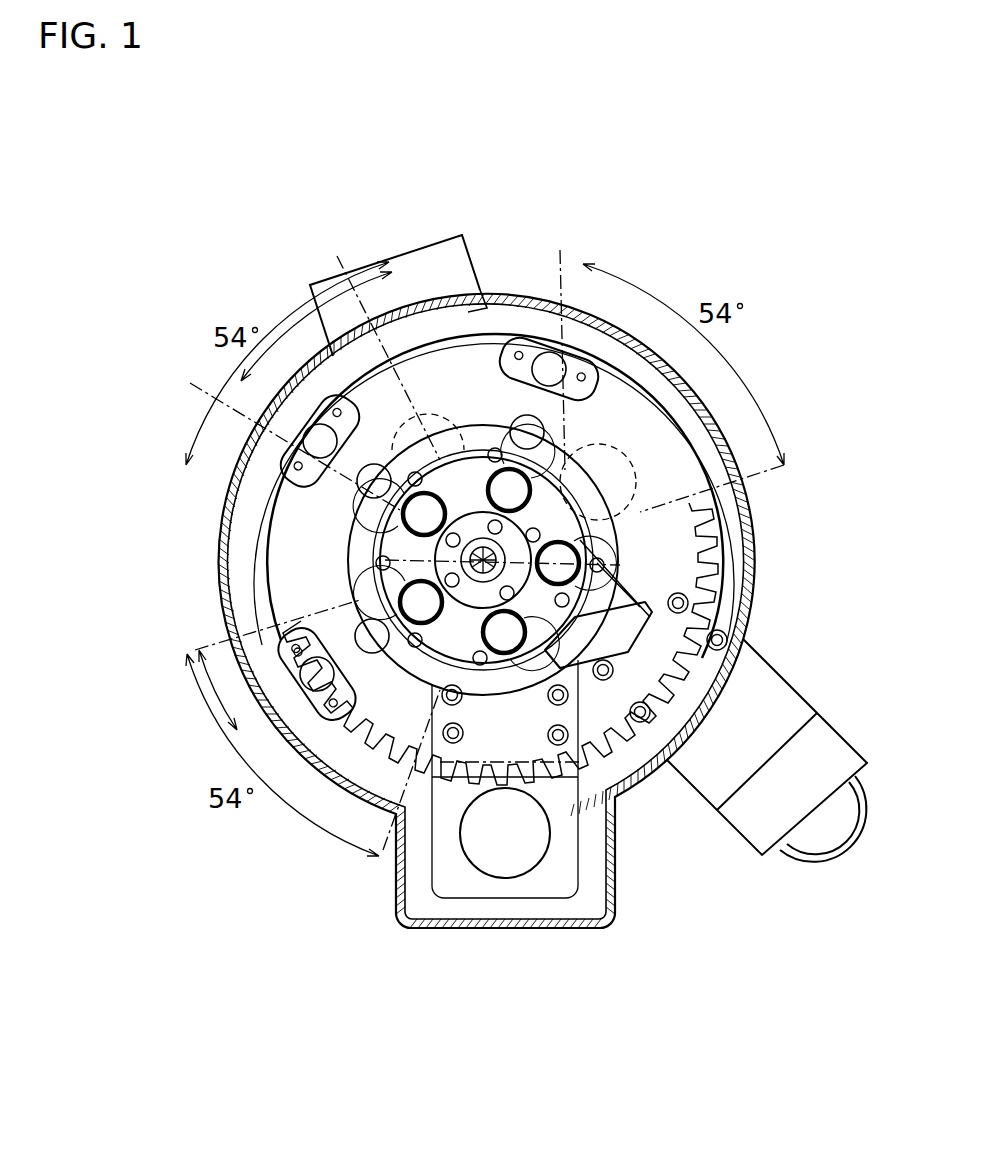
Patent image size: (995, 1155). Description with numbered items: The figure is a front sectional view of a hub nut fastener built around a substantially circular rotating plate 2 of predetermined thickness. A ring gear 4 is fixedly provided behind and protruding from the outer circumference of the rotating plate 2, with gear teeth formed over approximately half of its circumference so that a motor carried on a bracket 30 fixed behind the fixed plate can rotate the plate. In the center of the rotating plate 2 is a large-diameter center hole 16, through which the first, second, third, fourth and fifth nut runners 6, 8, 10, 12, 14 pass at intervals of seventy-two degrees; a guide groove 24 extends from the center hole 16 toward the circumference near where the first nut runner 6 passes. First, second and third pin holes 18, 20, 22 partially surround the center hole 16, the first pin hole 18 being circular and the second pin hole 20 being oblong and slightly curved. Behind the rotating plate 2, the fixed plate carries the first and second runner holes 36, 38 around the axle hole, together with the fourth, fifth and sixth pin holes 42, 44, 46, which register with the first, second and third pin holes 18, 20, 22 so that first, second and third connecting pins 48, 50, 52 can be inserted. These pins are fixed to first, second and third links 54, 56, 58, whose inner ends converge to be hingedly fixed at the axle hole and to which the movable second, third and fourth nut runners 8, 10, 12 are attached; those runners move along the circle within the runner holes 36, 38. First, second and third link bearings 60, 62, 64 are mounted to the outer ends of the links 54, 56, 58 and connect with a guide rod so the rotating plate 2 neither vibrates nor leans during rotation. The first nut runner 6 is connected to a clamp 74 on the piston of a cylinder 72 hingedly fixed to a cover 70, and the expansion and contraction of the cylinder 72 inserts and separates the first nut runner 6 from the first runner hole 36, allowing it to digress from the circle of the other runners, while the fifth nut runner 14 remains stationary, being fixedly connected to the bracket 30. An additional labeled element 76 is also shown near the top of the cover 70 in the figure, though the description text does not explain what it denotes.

The rotating plate 2 is at (675, 553).
The ring gear 4 is at (620, 780).
The first nut runner 6 is at (650, 590).
The second nut runner 8 is at (565, 468).
The third nut runner 10 is at (340, 372).
The fourth nut runner 12 is at (375, 583).
The fifth nut runner 14 is at (498, 642).
The center hole 16 is at (600, 512).
The first pin hole 18 is at (219, 690).
The second pin hole 20 is at (348, 516).
The third pin hole 22 is at (475, 692).
The guide groove 24 is at (700, 625).
The bracket 30 is at (518, 897).
The first runner hole 36 is at (316, 326).
The second runner hole 38 is at (735, 660).
The fourth pin hole 42 is at (612, 460).
The fifth pin hole 44 is at (338, 272).
The sixth pin hole 46 is at (355, 630).
The first connecting pin 48 is at (528, 416).
The second connecting pin 50 is at (357, 485).
The third connecting pin 52 is at (345, 668).
The first link 54 is at (582, 421).
The second link 56 is at (345, 563).
The third link 58 is at (296, 656).
The first link bearing 60 is at (548, 358).
The second link bearing 62 is at (330, 430).
The third link bearing 64 is at (300, 700).
The cover 70 is at (485, 282).
The cylinder 72 is at (838, 836).
The clamp 74 is at (760, 832).
The connector block 76 is at (420, 258).